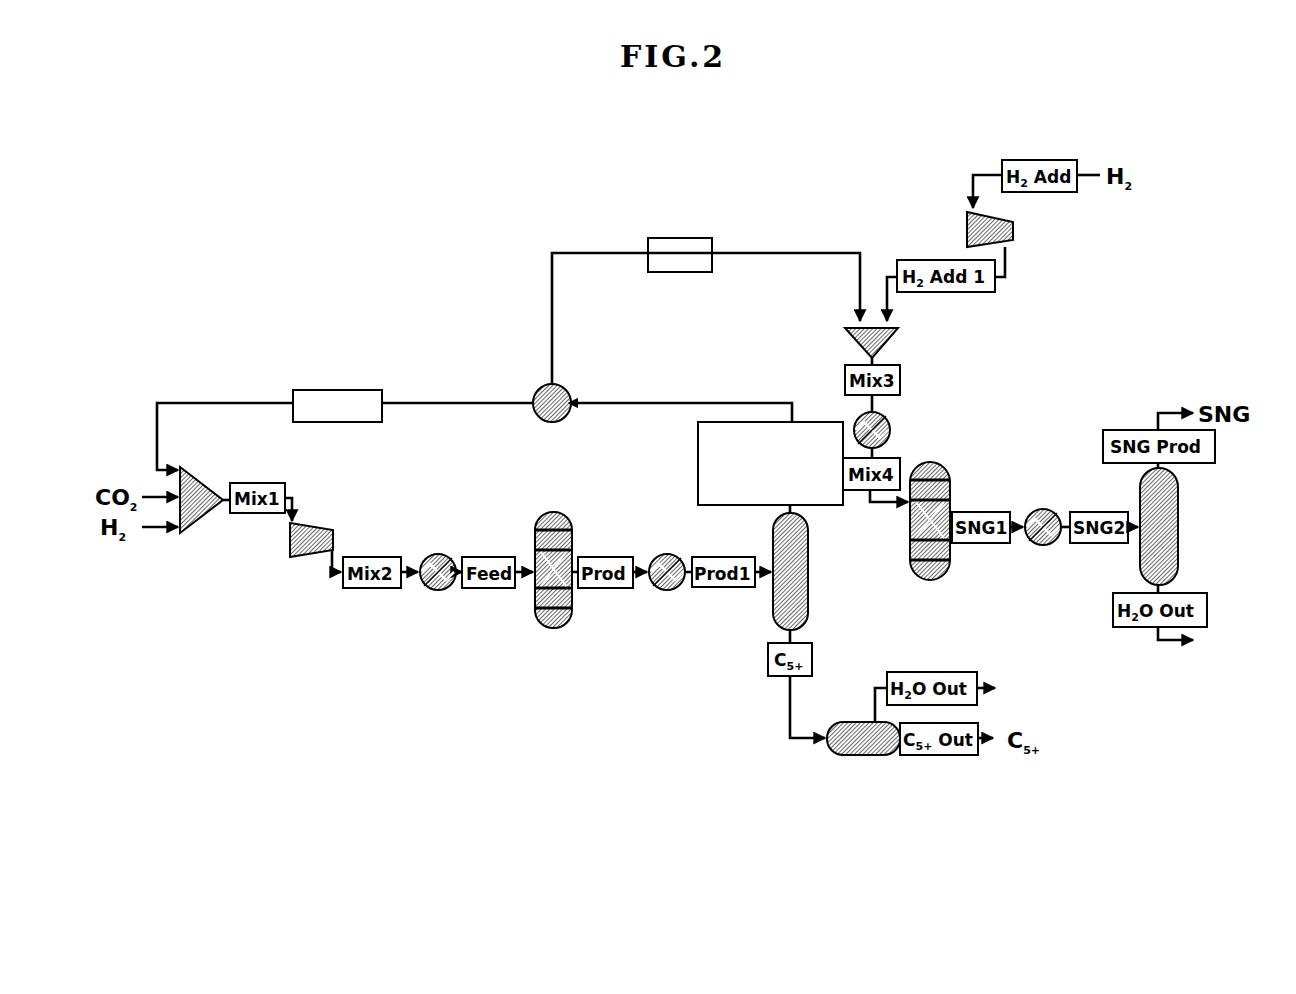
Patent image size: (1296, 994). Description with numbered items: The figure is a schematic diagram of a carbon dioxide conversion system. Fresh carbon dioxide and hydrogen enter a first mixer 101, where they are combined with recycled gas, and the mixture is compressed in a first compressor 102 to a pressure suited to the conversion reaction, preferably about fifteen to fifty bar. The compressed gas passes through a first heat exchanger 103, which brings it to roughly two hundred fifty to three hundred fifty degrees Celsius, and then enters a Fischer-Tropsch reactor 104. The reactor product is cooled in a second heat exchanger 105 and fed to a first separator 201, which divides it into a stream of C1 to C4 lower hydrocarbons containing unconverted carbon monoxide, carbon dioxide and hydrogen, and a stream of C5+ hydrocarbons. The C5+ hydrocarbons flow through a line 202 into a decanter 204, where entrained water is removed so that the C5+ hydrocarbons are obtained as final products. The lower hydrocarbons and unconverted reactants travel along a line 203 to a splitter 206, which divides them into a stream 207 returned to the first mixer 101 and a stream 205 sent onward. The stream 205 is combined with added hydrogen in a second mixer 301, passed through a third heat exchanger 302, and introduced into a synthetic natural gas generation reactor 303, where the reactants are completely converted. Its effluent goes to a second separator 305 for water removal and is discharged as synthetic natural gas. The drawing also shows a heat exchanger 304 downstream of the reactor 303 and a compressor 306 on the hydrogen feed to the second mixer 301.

The first mixer 101 is at (196, 530).
The first compressor 102 is at (306, 562).
The first heat exchanger 103 is at (438, 592).
The Fischer-Tropsch reactor 104 is at (540, 625).
The second heat exchanger 105 is at (667, 592).
The first separator 201 is at (768, 622).
The line 202 is at (785, 692).
The line 203 is at (710, 406).
The decanter 204 is at (845, 762).
The stream 205 is at (730, 262).
The splitter 206 is at (530, 393).
The stream 207 is at (265, 396).
The second mixer 301 is at (905, 343).
The third heat exchanger 302 is at (895, 435).
The synthetic natural gas generation reactor 303 is at (950, 574).
The fourth heat exchanger 304 is at (1045, 505).
The second separator 305 is at (1183, 540).
The hydrogen compressor 306 is at (1015, 232).